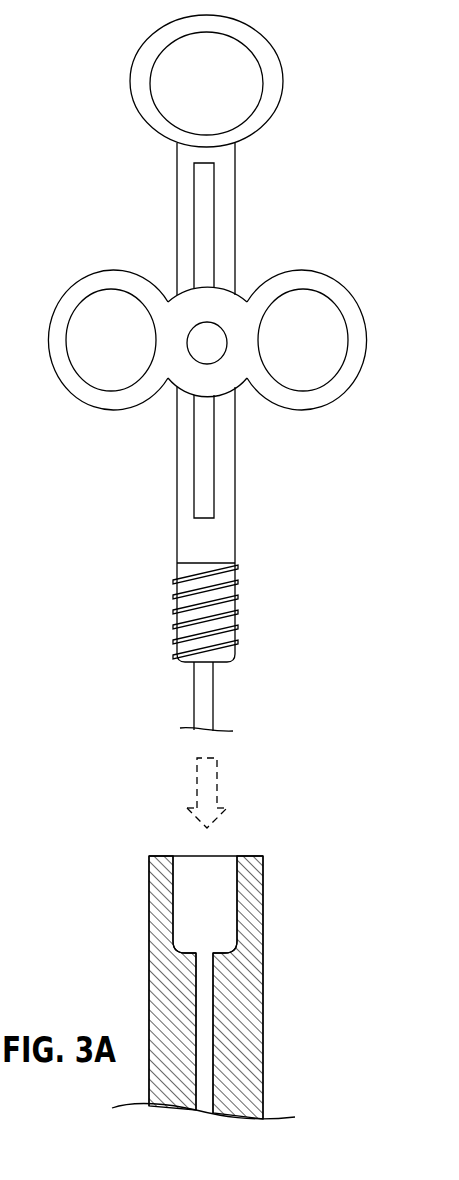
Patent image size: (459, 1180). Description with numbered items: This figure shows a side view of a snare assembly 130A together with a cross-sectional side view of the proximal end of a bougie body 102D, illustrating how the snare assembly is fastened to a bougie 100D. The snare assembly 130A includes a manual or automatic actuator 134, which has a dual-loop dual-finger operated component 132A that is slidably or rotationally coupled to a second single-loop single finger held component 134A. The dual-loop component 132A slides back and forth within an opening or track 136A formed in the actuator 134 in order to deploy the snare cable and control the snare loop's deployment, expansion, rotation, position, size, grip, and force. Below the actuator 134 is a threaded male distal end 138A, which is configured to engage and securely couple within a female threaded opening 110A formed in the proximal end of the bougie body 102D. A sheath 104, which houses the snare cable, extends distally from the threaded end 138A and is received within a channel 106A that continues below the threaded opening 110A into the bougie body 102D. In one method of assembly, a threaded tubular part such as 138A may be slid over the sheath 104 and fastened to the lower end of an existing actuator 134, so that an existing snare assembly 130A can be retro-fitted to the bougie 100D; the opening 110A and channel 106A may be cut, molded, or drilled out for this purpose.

The bougie 100D is at (106, 639).
The snare assembly 130A is at (305, 175).
The single-loop single finger held component 134A is at (282, 62).
The opening or track 136A is at (203, 212).
The dual-loop dual-finger operated component 132A is at (317, 272).
The actuator 134 is at (233, 498).
The threaded male distal end 138A is at (257, 627).
The sheath 104 is at (213, 702).
The bougie body 102D is at (149, 910).
The female threaded opening 110A is at (215, 916).
The channel 106A is at (200, 997).